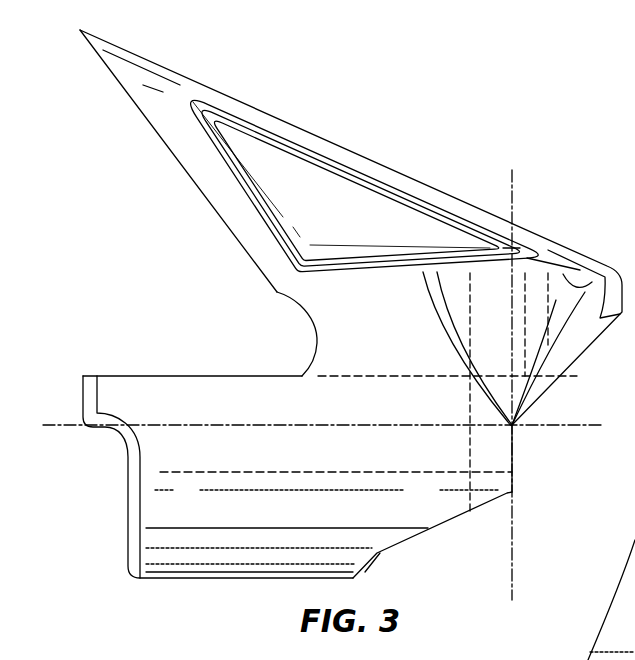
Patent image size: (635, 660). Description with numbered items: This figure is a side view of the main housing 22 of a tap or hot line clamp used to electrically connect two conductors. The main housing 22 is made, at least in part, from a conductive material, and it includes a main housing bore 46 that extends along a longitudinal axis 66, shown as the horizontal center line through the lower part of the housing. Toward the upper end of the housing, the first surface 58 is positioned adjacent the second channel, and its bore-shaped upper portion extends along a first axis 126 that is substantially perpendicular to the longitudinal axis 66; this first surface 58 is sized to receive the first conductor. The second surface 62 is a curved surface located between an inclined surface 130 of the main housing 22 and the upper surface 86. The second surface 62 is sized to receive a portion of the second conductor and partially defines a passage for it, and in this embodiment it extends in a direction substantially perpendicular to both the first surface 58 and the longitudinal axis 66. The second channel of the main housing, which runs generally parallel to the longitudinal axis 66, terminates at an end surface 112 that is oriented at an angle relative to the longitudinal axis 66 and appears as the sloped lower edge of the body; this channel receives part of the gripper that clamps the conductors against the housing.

The main housing 22 is at (398, 134).
The inclined surface 130 is at (198, 185).
The second surface 62 is at (312, 326).
The first axis 126 is at (513, 205).
The first surface 58 is at (536, 293).
The upper surface 86 is at (155, 375).
The longitudinal axis 66 is at (70, 425).
The main housing bore 46 is at (488, 448).
The end surface 112 is at (417, 537).